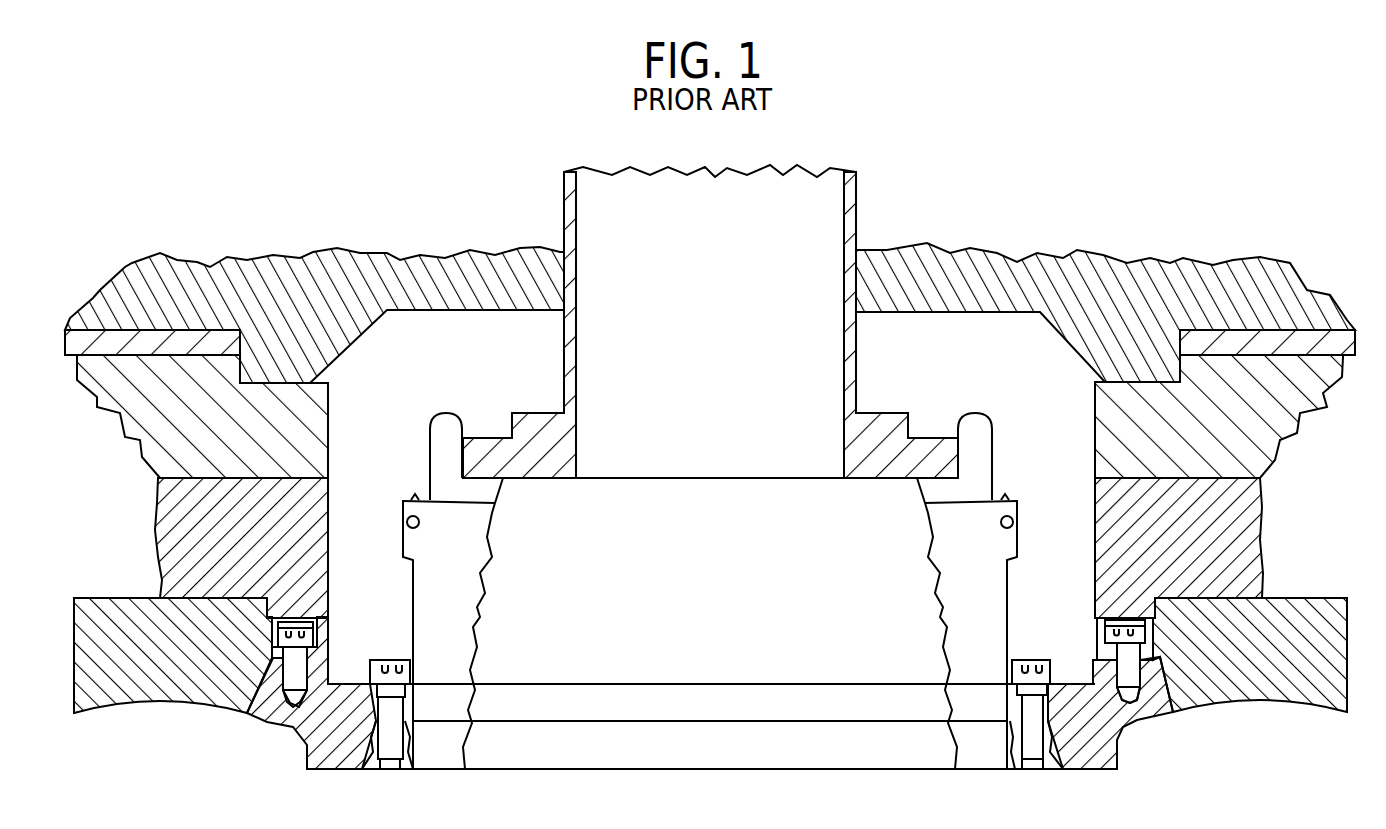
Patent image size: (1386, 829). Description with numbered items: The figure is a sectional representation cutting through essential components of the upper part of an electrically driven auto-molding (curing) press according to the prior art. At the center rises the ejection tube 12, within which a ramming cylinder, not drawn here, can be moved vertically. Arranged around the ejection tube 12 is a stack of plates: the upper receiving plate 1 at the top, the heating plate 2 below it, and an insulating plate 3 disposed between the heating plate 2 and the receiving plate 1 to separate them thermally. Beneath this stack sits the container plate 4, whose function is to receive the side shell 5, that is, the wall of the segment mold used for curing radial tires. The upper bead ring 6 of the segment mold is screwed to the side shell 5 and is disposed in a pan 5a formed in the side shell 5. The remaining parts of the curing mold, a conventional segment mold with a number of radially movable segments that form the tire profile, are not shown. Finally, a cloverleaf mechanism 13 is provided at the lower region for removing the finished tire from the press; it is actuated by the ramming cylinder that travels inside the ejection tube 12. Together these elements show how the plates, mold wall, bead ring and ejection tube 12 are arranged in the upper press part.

The upper receiving plate 1 is at (1090, 275).
The heating plate 2 is at (1278, 420).
The insulating plate 3 is at (1282, 342).
The container plate 4 is at (1240, 535).
The side shell 5 is at (1335, 668).
The pan 5a is at (1165, 653).
The upper bead ring 6 is at (1083, 747).
The ejection tube 12 is at (850, 222).
The cloverleaf mechanism 13 is at (982, 744).